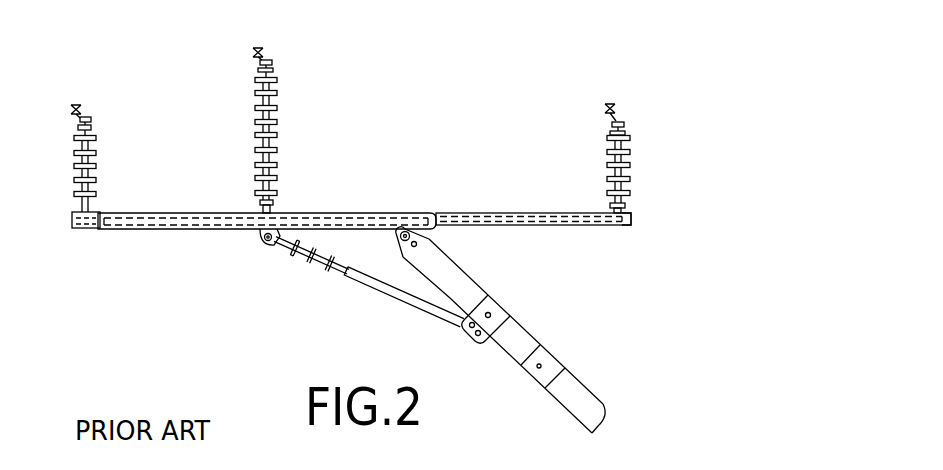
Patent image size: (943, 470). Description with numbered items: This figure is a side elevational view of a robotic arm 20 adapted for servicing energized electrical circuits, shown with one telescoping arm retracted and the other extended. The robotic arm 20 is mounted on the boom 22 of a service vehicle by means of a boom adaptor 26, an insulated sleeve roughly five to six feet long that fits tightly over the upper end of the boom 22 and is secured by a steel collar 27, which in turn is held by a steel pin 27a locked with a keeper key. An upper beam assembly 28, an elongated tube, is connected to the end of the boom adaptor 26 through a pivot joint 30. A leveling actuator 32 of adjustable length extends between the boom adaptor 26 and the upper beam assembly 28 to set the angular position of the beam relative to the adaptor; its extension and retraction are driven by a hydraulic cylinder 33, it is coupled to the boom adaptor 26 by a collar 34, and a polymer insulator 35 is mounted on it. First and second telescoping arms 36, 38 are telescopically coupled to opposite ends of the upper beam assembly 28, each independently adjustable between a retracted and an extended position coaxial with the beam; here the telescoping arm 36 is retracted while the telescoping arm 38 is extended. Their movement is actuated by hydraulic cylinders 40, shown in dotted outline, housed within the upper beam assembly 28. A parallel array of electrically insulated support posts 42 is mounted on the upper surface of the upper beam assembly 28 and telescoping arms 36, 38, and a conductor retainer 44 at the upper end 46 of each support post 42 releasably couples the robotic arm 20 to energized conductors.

The robotic arm 20 is at (300, 305).
The boom 22 is at (570, 402).
The boom adaptor 26 is at (520, 335).
The steel collar 27 is at (563, 357).
The steel pin 27a is at (537, 372).
The upper beam assembly 28 is at (200, 228).
The pivot joint 30 is at (418, 235).
The leveling actuator 32 is at (355, 288).
The hydraulic cylinder 33 is at (402, 297).
The collar 34 is at (493, 312).
The polymer insulator 35 is at (297, 257).
The first telescoping arm 36 is at (79, 226).
The second telescoping arm 38 is at (625, 223).
The hydraulic cylinders 40 is at (148, 228).
The electrically insulated support posts 42 is at (267, 157).
The conductor retainer 44 is at (257, 57).
The upper end 46 is at (266, 66).